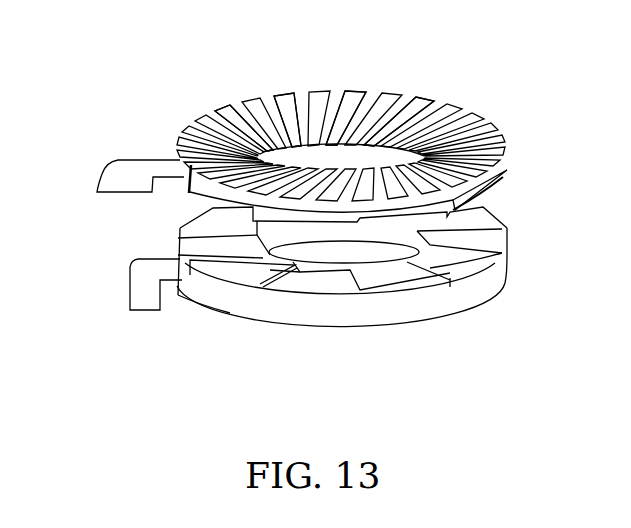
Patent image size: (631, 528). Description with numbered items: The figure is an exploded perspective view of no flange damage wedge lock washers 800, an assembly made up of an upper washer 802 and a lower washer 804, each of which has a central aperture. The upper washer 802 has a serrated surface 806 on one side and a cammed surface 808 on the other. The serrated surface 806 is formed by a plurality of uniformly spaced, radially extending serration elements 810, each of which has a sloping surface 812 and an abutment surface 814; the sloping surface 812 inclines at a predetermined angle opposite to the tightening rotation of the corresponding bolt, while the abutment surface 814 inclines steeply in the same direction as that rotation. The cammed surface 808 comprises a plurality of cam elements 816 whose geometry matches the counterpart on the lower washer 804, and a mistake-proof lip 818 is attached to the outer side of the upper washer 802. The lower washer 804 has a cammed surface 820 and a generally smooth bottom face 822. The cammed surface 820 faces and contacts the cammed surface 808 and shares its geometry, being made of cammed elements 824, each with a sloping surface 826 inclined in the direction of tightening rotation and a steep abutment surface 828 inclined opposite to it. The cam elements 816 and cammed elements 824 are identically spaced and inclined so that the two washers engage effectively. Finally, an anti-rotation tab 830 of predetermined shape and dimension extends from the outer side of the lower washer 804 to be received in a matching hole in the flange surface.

The no flange damage wedge lock washers 800 is at (151, 85).
The upper washer 802 is at (197, 182).
The lower washer 804 is at (320, 312).
The serrated surface 806 is at (243, 104).
The cammed surface 808 is at (197, 196).
The serration elements 810 is at (298, 97).
The sloping surface 812 is at (343, 102).
The abutment surface 814 is at (388, 104).
The cam elements 816 is at (452, 208).
The mistake-proof lip 818 is at (122, 175).
The cammed surface 820 is at (487, 238).
The bottom face 822 is at (283, 322).
The cammed elements 824 is at (503, 252).
The sloping surface 826 is at (397, 282).
The abutment surface 828 is at (262, 290).
The anti-rotation tab 830 is at (135, 283).